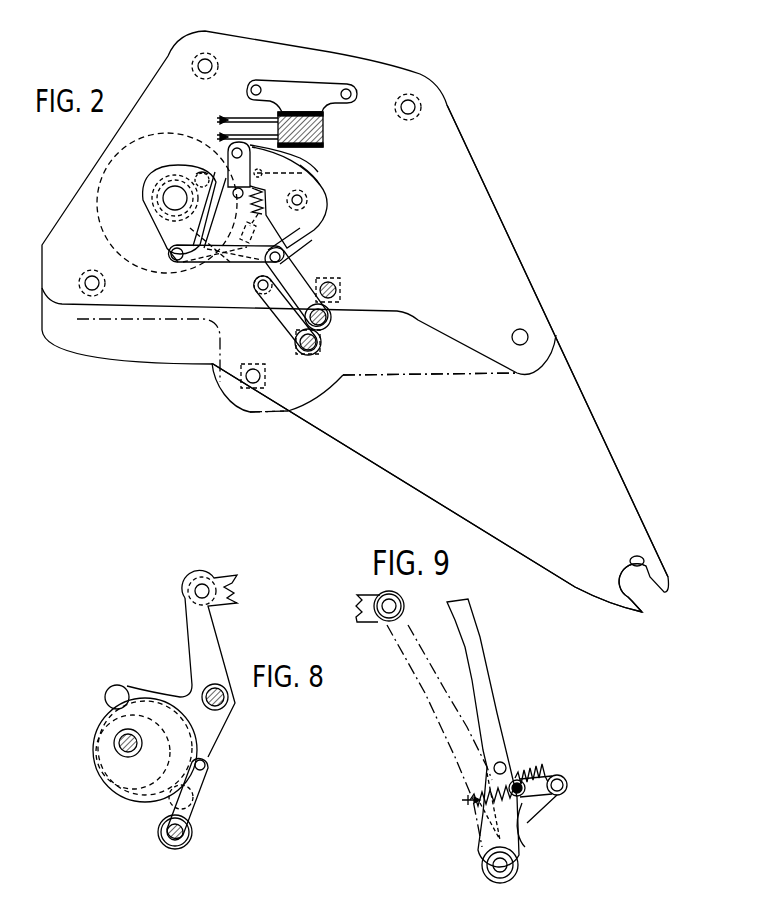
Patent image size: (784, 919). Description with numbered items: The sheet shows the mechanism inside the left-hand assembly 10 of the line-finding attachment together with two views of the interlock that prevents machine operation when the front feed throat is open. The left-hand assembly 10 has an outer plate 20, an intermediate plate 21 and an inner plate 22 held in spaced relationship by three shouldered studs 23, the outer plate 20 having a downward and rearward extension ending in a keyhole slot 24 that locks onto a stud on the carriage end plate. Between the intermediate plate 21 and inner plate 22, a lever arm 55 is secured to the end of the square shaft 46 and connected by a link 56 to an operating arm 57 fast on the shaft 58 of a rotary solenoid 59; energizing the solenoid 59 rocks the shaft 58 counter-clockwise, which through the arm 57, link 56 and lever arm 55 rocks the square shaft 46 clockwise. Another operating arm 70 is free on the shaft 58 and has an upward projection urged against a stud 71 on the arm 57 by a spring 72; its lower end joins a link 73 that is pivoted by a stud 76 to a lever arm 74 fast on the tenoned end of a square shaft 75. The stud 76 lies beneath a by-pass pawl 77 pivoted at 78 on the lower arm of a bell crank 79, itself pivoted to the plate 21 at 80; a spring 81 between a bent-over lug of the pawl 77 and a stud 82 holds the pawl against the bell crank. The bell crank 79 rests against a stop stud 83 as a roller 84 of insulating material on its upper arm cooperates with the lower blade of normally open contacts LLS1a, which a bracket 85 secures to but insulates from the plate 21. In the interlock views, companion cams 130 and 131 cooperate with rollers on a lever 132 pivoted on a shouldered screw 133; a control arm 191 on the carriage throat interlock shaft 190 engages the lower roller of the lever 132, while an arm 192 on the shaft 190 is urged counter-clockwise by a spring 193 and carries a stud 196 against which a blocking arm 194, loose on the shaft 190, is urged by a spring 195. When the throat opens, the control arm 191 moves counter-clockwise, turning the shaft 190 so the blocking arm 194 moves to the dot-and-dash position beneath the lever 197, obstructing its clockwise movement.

In FIG. 2, the left-hand assembly 10 is at (366, 50).
In FIG. 2, the outer plate 20 is at (592, 420).
In FIG. 2, the intermediate plate 21 is at (516, 256).
In FIG. 2, the inner plate 22 is at (373, 376).
In FIG. 2, the shouldered studs 23 is at (212, 54).
In FIG. 2, the keyhole slot 24 is at (652, 556).
In FIG. 2, the square shaft 46 is at (331, 318).
In FIG. 2, the lever arm 55 is at (300, 281).
In FIG. 2, the link 56 is at (225, 254).
In FIG. 2, the operating arm 57 is at (165, 223).
In FIG. 2, the shaft 58 is at (176, 199).
In FIG. 2, the rotary solenoid 59 is at (148, 130).
In FIG. 2, the operating arm 70 is at (222, 156).
In FIG. 2, the stud 71 is at (193, 166).
In FIG. 2, the spring 72 is at (165, 230).
In FIG. 2, the link 73 is at (232, 268).
In FIG. 2, the lever arm 74 is at (287, 320).
In FIG. 2, the square shaft 75 is at (321, 343).
In FIG. 2, the stud 76 is at (258, 288).
In FIG. 2, the by-pass pawl 77 is at (291, 246).
In FIG. 2, the pivot 78 is at (207, 272).
In FIG. 2, the bell crank 79 is at (306, 185).
In FIG. 2, the pivot 80 is at (302, 200).
In FIG. 2, the spring 81 is at (303, 220).
In FIG. 2, the stud 82 is at (306, 144).
In FIG. 2, the stop stud 83 is at (238, 199).
In FIG. 2, the roller 84 is at (271, 150).
In FIG. 2, the bracket 85 is at (312, 88).
In FIG. 2, the normally open contacts LLS1a is at (245, 112).
In FIG. 8, the cam 130 is at (118, 772).
In FIG. 8, the cam 131 is at (120, 800).
In FIG. 8, the lever 132 is at (212, 640).
In FIG. 8, the shouldered screw 133 is at (236, 703).
In FIG. 8, the carriage throat interlock shaft 190 is at (168, 832).
In FIG. 9, the carriage throat interlock shaft 190 is at (495, 872).
In FIG. 8, the control arm 191 is at (200, 806).
In FIG. 9, the arm 192 is at (520, 855).
In FIG. 9, the spring 193 is at (542, 797).
In FIG. 9, the blocking arm 194 is at (484, 672).
In FIG. 9, the spring 195 is at (520, 778).
In FIG. 9, the stud 196 is at (522, 810).
In FIG. 9, the lever 197 is at (370, 620).